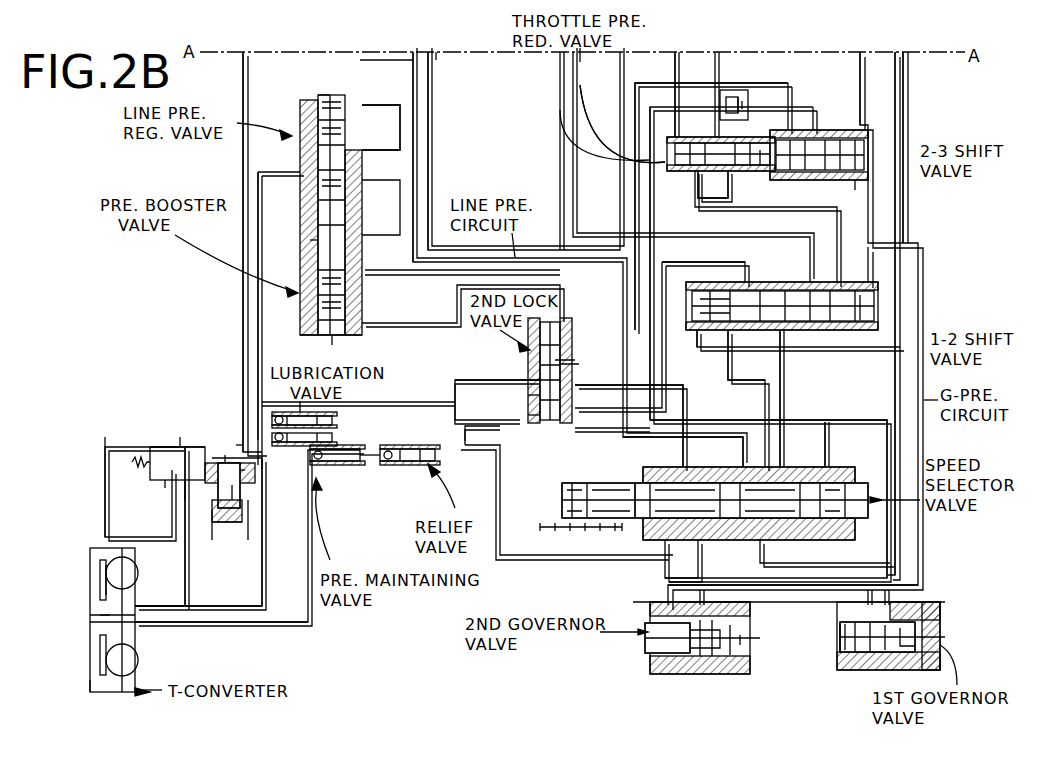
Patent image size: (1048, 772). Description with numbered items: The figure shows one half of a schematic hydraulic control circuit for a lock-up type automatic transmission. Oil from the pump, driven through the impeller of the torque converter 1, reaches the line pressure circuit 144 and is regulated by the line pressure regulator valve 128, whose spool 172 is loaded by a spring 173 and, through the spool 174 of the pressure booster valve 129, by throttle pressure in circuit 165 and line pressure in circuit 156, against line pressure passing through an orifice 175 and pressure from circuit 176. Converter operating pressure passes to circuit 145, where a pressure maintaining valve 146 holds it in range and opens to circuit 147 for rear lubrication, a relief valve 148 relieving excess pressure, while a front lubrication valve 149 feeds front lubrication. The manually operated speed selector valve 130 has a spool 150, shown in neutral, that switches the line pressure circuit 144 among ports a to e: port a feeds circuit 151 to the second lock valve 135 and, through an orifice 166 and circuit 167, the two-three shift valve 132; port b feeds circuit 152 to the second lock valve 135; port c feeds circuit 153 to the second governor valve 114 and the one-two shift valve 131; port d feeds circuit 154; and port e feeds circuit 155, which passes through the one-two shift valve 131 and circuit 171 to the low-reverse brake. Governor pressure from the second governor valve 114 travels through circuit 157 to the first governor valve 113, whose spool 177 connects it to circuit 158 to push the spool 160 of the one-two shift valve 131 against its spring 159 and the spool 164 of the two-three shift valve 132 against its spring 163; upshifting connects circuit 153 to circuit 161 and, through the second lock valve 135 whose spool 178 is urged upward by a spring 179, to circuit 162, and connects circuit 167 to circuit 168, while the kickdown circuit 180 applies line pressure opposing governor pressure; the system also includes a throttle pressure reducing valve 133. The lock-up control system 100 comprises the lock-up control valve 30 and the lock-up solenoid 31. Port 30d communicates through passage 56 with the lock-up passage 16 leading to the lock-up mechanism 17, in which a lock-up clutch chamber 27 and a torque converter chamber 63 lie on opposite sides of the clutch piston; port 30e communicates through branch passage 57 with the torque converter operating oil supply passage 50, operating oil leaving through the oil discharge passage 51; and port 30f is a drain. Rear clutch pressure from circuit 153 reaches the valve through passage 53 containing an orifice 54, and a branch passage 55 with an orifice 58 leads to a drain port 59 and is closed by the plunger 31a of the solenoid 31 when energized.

The torque converter 1 is at (140, 647).
The lock-up passage 16 is at (158, 612).
The lock-up mechanism 17 is at (88, 668).
The lock-up clutch chamber 27 is at (98, 611).
The lock-up control valve 30 is at (168, 463).
The port 30d is at (188, 430).
The port 30e is at (188, 486).
The drain port 30f is at (166, 484).
The lock-up solenoid 31 is at (228, 522).
The plunger 31a is at (244, 474).
The oil feed passage 50 is at (240, 608).
The oil discharge passage 51 is at (240, 630).
The passage 53 is at (245, 445).
The orifice 54 is at (245, 461).
The branch passage 55 is at (214, 520).
The passage 56 is at (105, 484).
The branch passage 57 is at (252, 512).
The orifice 58 is at (230, 454).
The drain port 59 is at (244, 492).
The torque converter chamber 63 is at (112, 560).
The lock-up control system 100 is at (142, 432).
The first governor valve 113 is at (835, 642).
The second governor valve 114 is at (752, 657).
The line pressure regulator valve 128 is at (322, 81).
The pressure booster valve 129 is at (312, 333).
The speed selector valve 130 is at (556, 507).
The 1-2 shift valve 131 is at (880, 325).
The 2-3 shift valve 132 is at (877, 162).
The throttle pressure reducing valve 133 is at (690, 168).
The second lock valve 135 is at (550, 327).
The line pressure circuit 144 is at (417, 65).
The circuit 145 is at (262, 172).
The pressure maintaining valve 146 is at (320, 464).
The circuit 147 is at (368, 462).
The relief valve 148 is at (412, 464).
The front lubrication valve 149 is at (340, 422).
The spool 150 is at (632, 487).
The circuit 151 is at (648, 108).
The circuit 152 is at (572, 360).
The circuit 153 is at (243, 70).
The circuit 154 is at (900, 62).
The circuit 155 is at (788, 359).
The circuit 156 is at (378, 318).
The circuit 157 is at (793, 594).
The circuit 158 is at (860, 65).
The spring 159 is at (690, 337).
The spool 160 is at (865, 312).
The circuit 161 is at (752, 283).
The circuit 162 is at (425, 86).
The spring 163 is at (738, 178).
The spool 164 is at (854, 176).
The circuit 165 is at (560, 65).
The orifice 166 is at (748, 108).
The circuit 167 is at (790, 130).
The circuit 168 is at (435, 107).
The circuit 171 is at (908, 90).
The spool 172 is at (322, 100).
The spring 173 is at (310, 240).
The spool 174 is at (335, 338).
The orifice 175 is at (390, 140).
The circuit 176 is at (398, 62).
The spool 177 is at (838, 650).
The spool 178 is at (528, 395).
The spring 179 is at (528, 415).
The kickdown circuit 180 is at (568, 120).